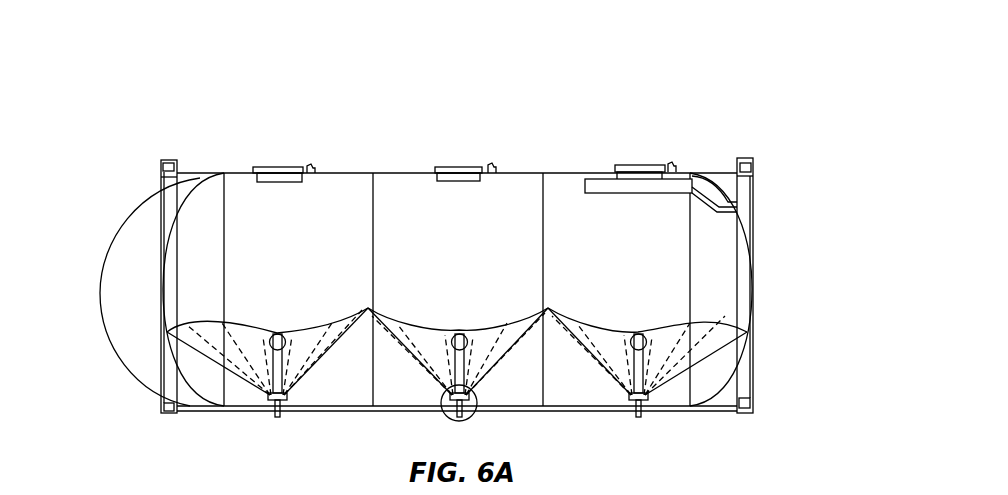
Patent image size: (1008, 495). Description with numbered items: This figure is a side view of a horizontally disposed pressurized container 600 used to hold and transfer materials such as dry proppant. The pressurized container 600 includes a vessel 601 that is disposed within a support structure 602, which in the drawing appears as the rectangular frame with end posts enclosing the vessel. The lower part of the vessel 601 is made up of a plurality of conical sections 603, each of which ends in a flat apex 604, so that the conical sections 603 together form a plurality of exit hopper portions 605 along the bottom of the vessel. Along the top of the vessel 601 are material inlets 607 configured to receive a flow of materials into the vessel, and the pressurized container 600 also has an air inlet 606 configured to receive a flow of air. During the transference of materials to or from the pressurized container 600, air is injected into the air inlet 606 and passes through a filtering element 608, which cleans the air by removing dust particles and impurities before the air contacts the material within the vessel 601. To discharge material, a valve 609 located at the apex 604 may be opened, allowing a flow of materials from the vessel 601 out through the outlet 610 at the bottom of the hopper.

The pressurized container 600 is at (749, 121).
The vessel 601 is at (188, 227).
The support structure 602 is at (752, 200).
The conical sections 603 is at (316, 331).
The flat apex 604 is at (277, 410).
The exit hopper portions 605 is at (422, 328).
The air inlet 606 is at (752, 258).
The material inlets 607 is at (282, 167).
The filtering element 608 is at (640, 195).
The valve 609 is at (473, 417).
The outlet 610 is at (636, 333).